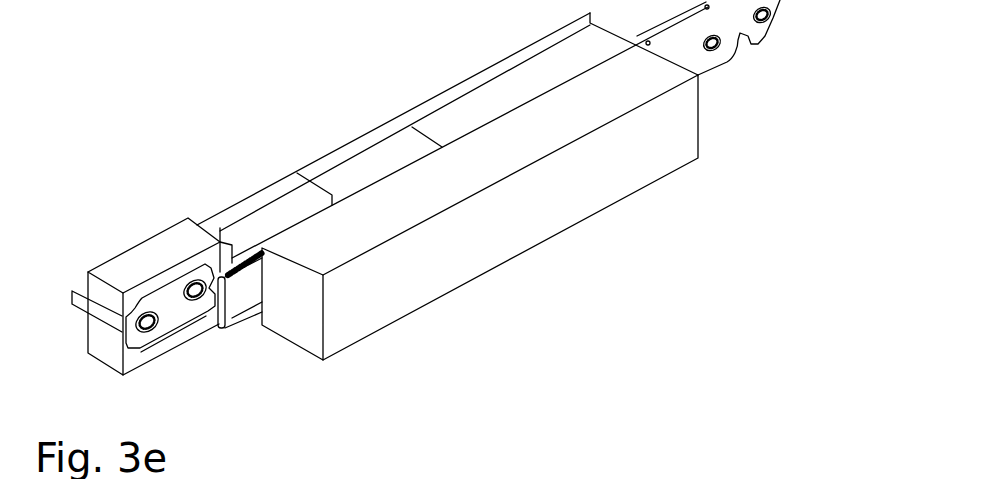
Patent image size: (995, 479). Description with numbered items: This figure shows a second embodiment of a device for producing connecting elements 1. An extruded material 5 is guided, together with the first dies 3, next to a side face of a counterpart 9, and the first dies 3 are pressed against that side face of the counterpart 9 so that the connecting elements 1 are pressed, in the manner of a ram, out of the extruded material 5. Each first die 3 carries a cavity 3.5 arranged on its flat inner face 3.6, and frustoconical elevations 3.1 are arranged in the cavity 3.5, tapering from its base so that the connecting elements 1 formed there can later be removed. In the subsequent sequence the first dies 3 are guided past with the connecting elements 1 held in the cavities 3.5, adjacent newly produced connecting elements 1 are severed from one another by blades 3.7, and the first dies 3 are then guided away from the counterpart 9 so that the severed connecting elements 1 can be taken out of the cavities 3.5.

The connecting element 1 is at (790, 15).
The first die 3 is at (456, 112).
The frustoconical elevation 3.1 is at (147, 323).
The cavity 3.5 is at (166, 296).
The flat inner face 3.6 is at (193, 260).
The blade 3.7 is at (69, 297).
The extruded material 5 is at (237, 300).
The counterpart 9 is at (395, 302).